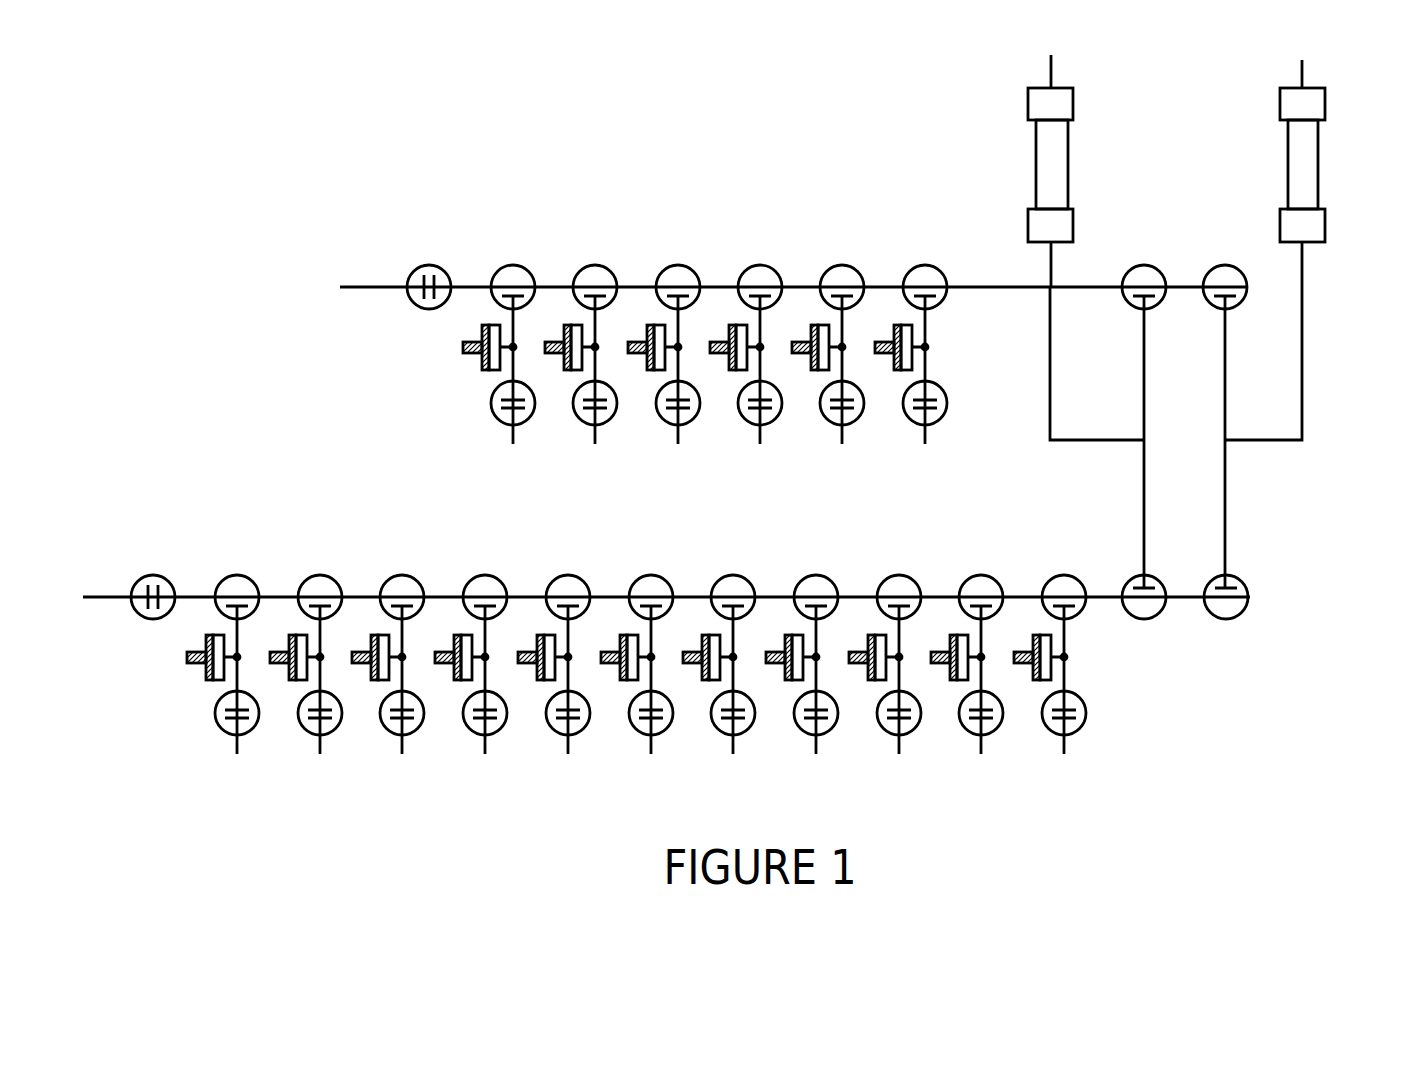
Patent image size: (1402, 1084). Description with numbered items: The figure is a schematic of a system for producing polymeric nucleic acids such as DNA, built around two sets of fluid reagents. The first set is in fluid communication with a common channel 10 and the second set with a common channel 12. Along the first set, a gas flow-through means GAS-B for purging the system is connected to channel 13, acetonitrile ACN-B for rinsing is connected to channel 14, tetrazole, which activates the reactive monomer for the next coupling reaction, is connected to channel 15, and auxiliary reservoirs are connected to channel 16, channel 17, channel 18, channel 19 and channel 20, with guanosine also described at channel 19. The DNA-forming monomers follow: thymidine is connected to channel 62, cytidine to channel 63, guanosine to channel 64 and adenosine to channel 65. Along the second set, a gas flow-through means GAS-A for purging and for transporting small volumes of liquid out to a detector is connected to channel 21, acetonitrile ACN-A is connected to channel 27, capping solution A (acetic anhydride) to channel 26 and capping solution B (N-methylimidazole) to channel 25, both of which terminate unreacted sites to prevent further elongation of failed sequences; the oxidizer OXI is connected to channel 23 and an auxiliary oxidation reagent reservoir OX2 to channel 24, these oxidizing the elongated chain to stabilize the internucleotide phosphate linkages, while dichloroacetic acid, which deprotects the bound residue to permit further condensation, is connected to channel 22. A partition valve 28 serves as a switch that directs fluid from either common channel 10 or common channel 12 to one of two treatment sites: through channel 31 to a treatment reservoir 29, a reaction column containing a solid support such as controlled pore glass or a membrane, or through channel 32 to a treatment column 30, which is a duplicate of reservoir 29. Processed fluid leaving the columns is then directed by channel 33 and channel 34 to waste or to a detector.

The common channel 10 is at (1100, 597).
The common channel 12 is at (983, 287).
The channel 13 is at (105, 597).
The channel 21 is at (375, 287).
The channel 14 is at (234, 683).
The channel 15 is at (318, 683).
The channel 16 is at (400, 683).
The channel 17 is at (483, 683).
The channel 18 is at (566, 683).
The channel 19 is at (649, 683).
The channel 20 is at (731, 683).
The channel 62 is at (814, 683).
The channel 63 is at (897, 683).
The channel 64 is at (979, 683).
The channel 65 is at (1062, 683).
The channel 22 is at (928, 369).
The channel 23 is at (845, 369).
The channel 24 is at (763, 369).
The channel 25 is at (681, 369).
The channel 26 is at (598, 369).
The channel 27 is at (516, 369).
The partition valve 28 is at (1150, 310).
The treatment reservoir 29 is at (1308, 153).
The treatment column 30 is at (1058, 153).
The channel 31 is at (1302, 320).
The channel 32 is at (1050, 378).
The channel 33 is at (1302, 70).
The channel 34 is at (1052, 70).